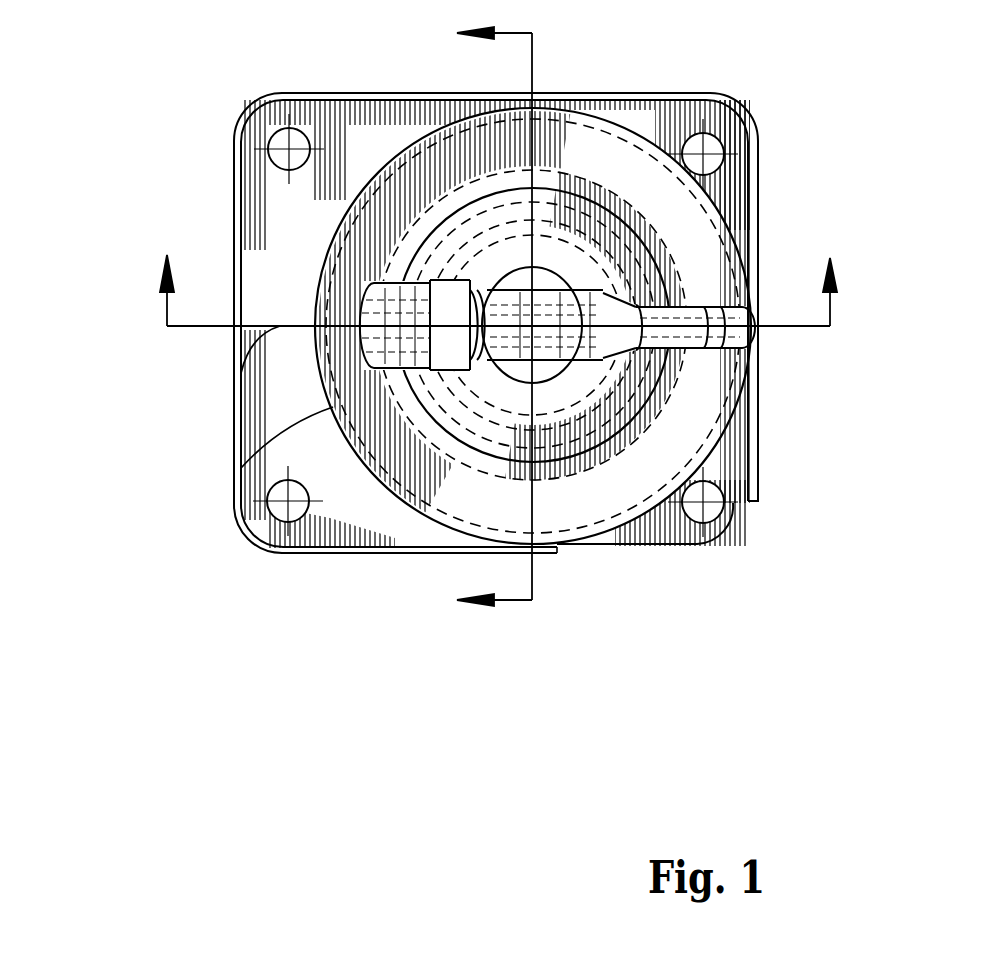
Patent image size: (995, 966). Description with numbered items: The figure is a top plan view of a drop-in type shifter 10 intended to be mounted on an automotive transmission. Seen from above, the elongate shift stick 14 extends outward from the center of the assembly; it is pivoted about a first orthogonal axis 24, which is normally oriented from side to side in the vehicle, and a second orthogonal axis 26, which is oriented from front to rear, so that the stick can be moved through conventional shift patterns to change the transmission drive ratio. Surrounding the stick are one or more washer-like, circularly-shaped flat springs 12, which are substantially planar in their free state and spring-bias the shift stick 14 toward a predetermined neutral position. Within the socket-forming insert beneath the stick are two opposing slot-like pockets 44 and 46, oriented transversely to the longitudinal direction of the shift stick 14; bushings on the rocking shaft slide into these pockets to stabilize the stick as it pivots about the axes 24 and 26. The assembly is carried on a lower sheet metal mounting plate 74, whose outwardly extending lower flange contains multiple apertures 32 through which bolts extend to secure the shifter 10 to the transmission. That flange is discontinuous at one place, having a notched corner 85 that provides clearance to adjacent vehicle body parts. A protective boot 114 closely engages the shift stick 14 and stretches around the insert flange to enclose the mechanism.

The drop-in type shifter 10 is at (178, 45).
The flat springs 12 is at (727, 190).
The shift stick 14 is at (763, 404).
The first orthogonal axis 24 is at (533, 78).
The second orthogonal axis 26 is at (234, 387).
The apertures 32 is at (303, 135).
The slot-like pocket 44 is at (548, 440).
The slot-like pocket 46 is at (597, 190).
The lower sheet metal mounting plate 74 is at (233, 147).
The notched corner 85 is at (740, 525).
The protective boot 114 is at (234, 468).